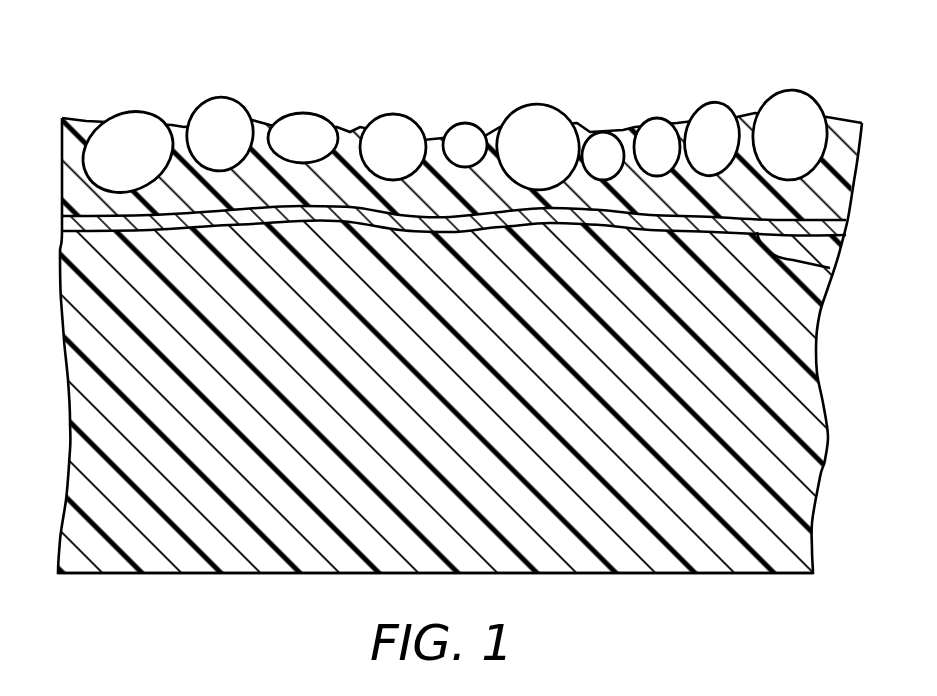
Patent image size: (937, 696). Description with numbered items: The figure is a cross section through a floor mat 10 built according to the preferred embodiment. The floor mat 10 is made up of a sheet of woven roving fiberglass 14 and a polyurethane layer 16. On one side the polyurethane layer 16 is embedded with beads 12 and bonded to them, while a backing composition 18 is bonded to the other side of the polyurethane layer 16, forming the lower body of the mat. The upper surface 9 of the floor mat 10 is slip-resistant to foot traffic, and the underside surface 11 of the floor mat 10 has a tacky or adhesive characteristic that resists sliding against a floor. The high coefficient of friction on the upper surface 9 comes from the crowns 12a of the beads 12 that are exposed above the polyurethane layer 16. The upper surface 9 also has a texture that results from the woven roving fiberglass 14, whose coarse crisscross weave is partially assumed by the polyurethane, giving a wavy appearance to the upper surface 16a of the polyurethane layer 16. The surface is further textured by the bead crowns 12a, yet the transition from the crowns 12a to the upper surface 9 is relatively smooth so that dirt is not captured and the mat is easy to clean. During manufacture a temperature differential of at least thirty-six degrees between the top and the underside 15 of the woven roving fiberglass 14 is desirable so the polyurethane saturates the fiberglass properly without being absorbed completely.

The upper surface 9 is at (453, 317).
The floor mat 10 is at (823, 390).
The underside surface 11 is at (695, 577).
The beads 12 is at (407, 137).
The crowns 12a is at (780, 102).
The sheet of woven roving fiberglass 14 is at (843, 225).
The underside of the woven roving fiberglass 15 is at (828, 268).
The polyurethane layer 16 is at (62, 170).
The upper surface of the polyurethane layer 16a is at (845, 118).
The backing composition 18 is at (107, 395).